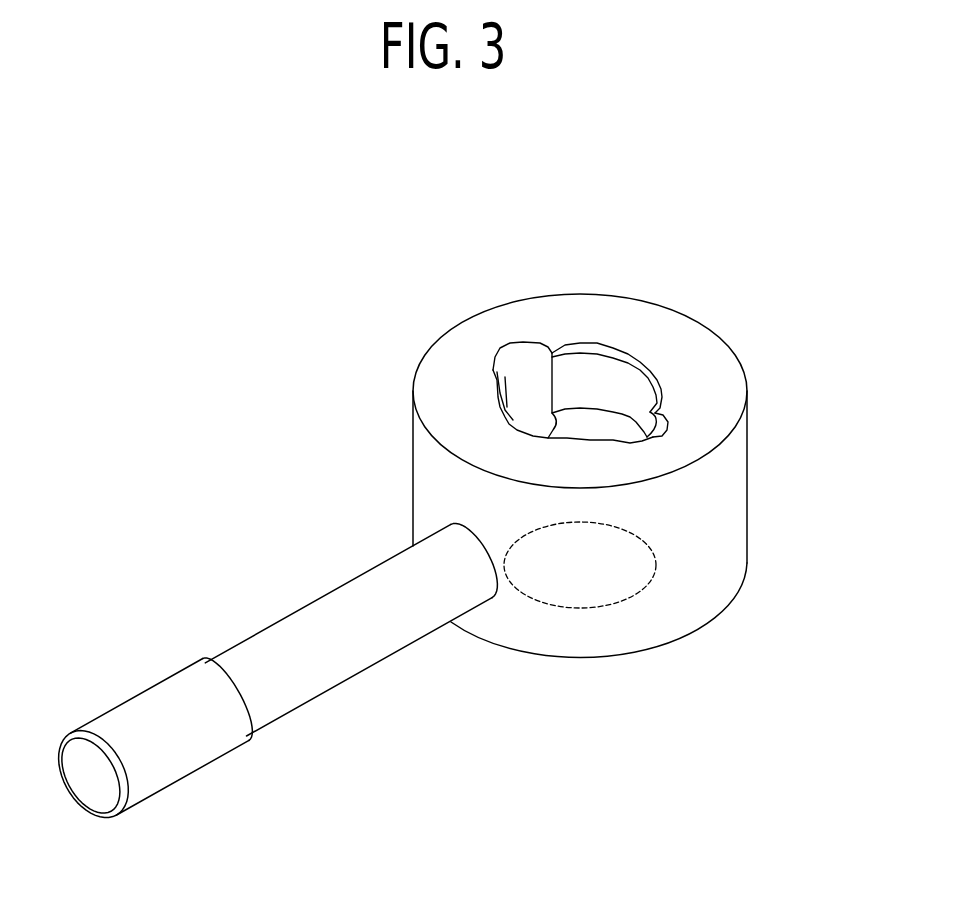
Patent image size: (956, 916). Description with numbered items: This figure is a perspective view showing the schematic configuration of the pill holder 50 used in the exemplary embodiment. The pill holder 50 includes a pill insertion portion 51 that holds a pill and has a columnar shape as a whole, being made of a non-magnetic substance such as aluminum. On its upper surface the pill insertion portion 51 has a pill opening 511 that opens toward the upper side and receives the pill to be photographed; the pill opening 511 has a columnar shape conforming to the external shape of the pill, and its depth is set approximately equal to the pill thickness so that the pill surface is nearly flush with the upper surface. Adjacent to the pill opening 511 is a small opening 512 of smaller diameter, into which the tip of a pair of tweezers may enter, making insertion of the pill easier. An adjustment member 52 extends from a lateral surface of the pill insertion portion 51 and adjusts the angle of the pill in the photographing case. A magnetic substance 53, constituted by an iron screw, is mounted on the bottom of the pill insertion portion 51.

The pill holder 50 is at (678, 261).
The pill insertion portion 51 is at (702, 355).
The pill opening 511 is at (591, 383).
The small opening 512 is at (522, 377).
The adjustment member 52 is at (331, 668).
The magnetic substance 53 is at (578, 610).